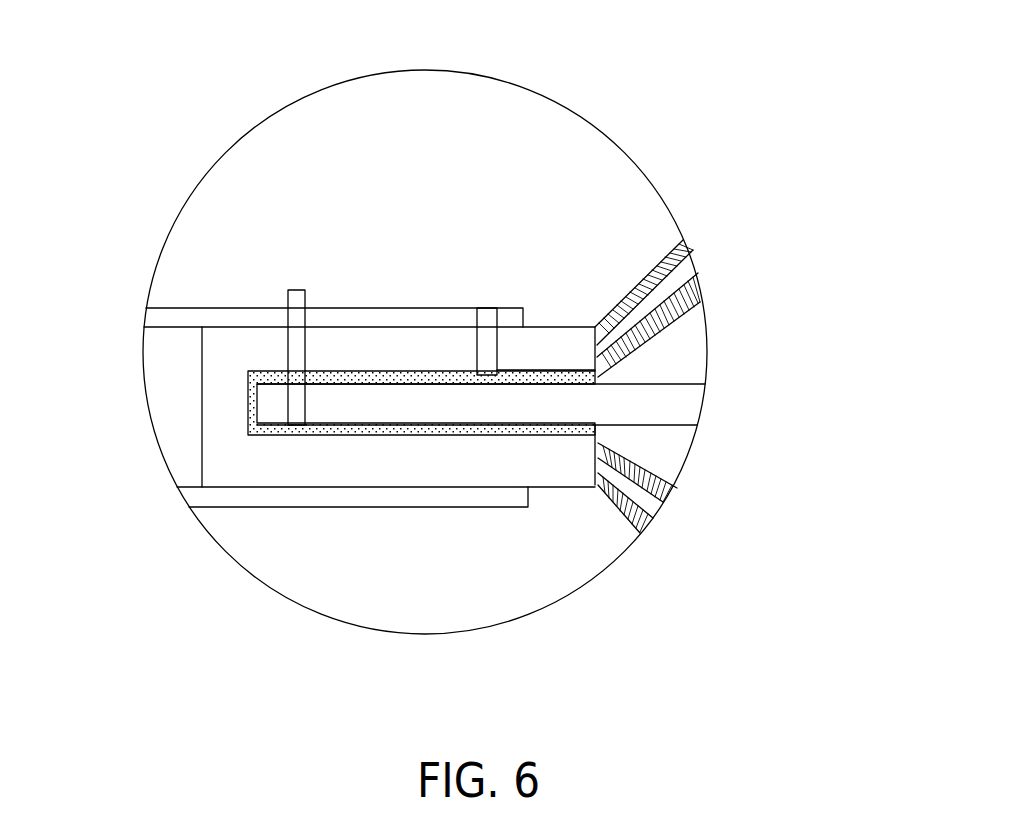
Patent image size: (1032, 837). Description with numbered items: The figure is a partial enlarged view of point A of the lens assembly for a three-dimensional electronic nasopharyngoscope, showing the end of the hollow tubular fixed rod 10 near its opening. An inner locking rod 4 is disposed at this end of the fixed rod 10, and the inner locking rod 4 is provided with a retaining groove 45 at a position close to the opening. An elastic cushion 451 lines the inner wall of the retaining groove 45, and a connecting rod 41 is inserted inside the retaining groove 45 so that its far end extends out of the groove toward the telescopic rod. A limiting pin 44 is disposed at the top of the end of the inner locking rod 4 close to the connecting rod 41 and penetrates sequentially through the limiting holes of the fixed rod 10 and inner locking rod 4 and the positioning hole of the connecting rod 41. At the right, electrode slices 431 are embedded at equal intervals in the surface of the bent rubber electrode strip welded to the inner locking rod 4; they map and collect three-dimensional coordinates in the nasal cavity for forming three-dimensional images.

The point A is at (655, 181).
The inner locking rod 4 is at (225, 372).
The fixed rod 10 is at (420, 308).
The connecting rod 41 is at (493, 402).
The electrode slices 431 is at (630, 345).
The limiting pin 44 is at (296, 289).
The retaining groove 45 is at (307, 433).
The elastic cushion 451 is at (373, 433).